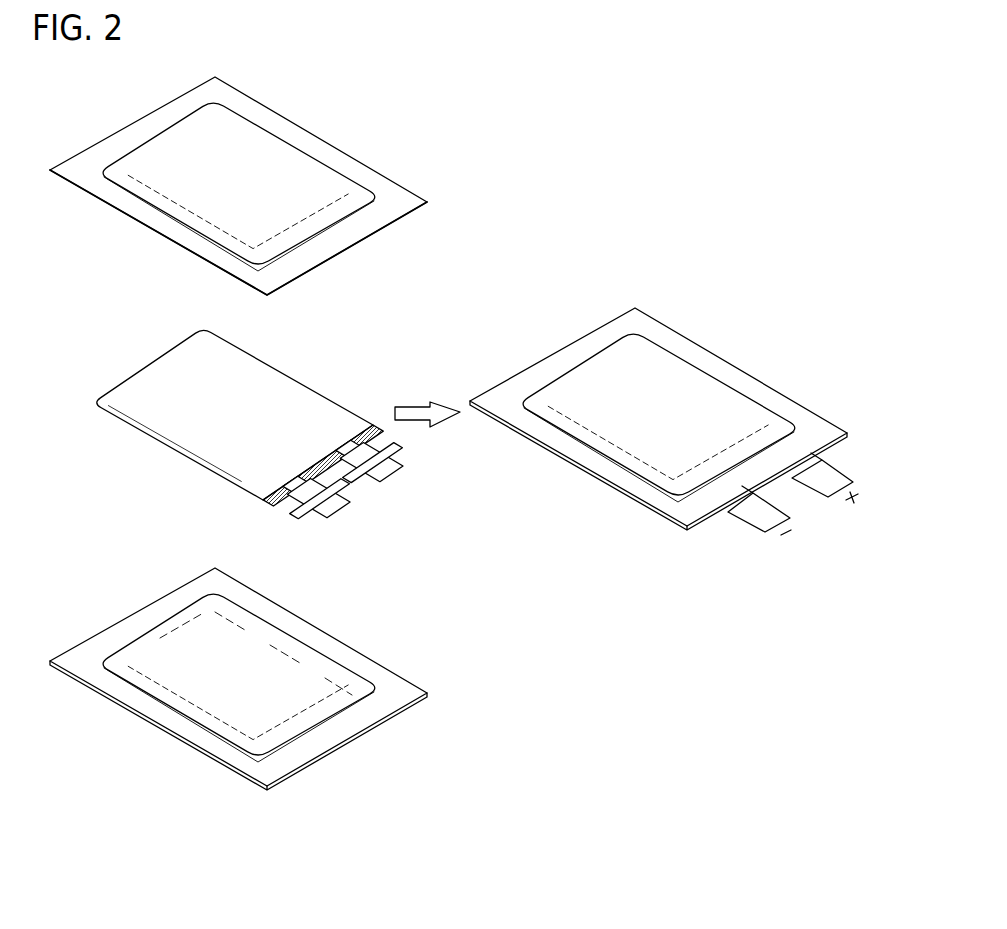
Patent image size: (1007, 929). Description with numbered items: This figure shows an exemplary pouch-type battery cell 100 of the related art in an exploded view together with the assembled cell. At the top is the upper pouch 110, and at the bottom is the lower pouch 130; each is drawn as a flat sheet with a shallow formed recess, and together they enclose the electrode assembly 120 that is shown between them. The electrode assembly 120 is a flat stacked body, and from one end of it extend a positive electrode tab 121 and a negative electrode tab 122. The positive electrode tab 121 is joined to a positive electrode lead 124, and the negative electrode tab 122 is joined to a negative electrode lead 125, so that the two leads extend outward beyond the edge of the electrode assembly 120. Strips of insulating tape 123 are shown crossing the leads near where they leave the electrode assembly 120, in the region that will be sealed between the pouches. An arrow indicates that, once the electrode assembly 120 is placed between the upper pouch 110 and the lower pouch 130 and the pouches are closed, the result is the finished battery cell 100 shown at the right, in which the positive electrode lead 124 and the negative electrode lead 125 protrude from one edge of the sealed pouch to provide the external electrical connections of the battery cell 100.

The battery cell 100 is at (722, 351).
The upper pouch 110 is at (417, 190).
The electrode assembly 120 is at (345, 393).
The positive electrode tab 121 is at (352, 443).
The negative electrode tab 122 is at (282, 486).
The insulating tape 123 is at (387, 465).
The positive electrode lead 124 is at (393, 477).
The negative electrode lead 125 is at (318, 510).
The lower pouch 130 is at (387, 665).